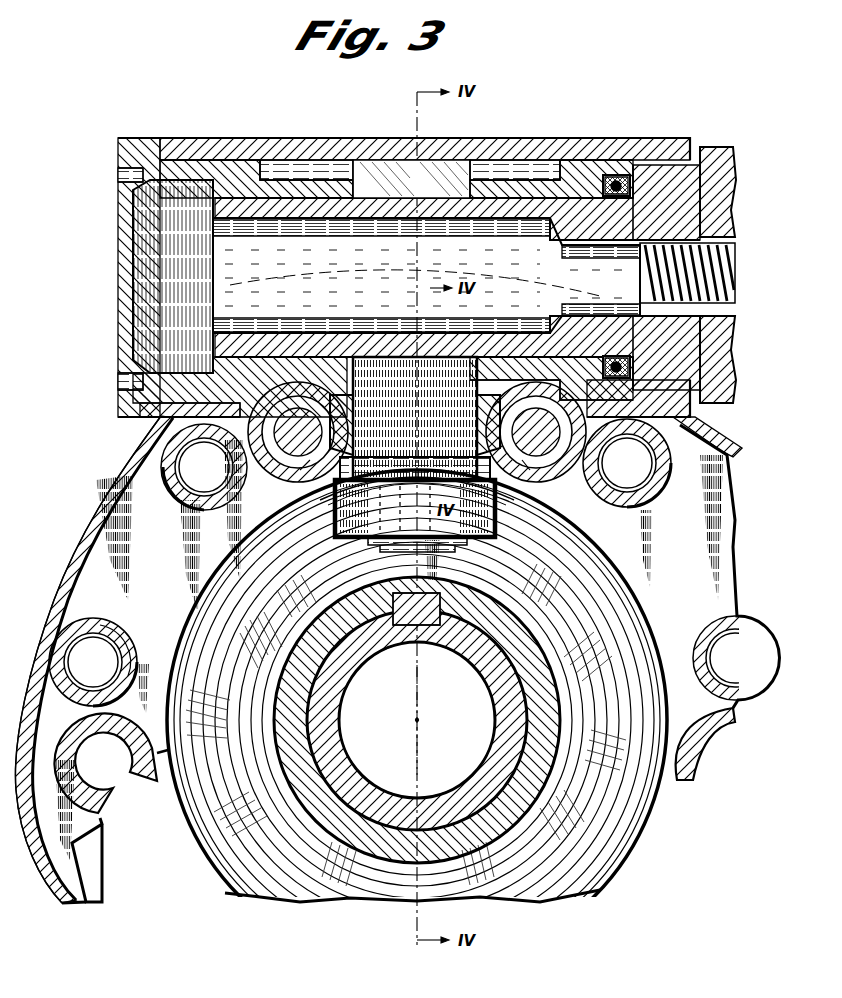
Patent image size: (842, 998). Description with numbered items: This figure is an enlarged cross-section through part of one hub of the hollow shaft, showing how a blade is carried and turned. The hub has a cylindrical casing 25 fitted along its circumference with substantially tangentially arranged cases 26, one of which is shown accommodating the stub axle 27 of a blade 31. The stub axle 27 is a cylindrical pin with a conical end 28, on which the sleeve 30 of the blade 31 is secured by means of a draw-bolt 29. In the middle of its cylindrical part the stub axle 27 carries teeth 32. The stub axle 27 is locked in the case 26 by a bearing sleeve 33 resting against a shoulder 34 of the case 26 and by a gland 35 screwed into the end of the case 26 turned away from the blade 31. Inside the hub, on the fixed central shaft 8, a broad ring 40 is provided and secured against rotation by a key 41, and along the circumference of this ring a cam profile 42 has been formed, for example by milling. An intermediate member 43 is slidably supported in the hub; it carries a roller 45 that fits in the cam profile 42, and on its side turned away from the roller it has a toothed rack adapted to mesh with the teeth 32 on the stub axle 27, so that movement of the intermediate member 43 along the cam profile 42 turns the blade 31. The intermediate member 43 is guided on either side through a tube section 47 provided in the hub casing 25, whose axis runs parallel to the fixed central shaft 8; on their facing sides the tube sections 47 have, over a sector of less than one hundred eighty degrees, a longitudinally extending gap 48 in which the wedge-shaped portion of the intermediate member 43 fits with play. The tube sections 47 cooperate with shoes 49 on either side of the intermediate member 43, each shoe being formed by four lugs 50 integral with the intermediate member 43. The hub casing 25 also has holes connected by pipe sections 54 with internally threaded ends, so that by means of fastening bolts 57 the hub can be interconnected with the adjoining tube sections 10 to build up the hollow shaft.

The fixed central shaft 8 is at (535, 720).
The tube section 10 is at (640, 582).
The cylindrical casing 25 is at (142, 430).
The case 26 is at (255, 147).
The stub axle 27 is at (298, 212).
The conical end 28 is at (672, 200).
The draw-bolt 29 is at (615, 282).
The sleeve 30 is at (708, 147).
The blade 31 is at (740, 160).
The teeth 32 is at (392, 185).
The bearing sleeve 33 is at (567, 178).
The shoulder 34 is at (627, 175).
The gland 35 is at (225, 178).
The broad ring 40 is at (300, 720).
The key 41 is at (410, 618).
The cam profile 42 is at (215, 602).
The intermediate member 43 is at (387, 395).
The roller 45 is at (356, 541).
The tube section 47 is at (258, 448).
The longitudinally extending gap 48 is at (722, 760).
The shoe 49 is at (517, 452).
The lug 50 is at (302, 458).
The pipe section 54 is at (707, 637).
The fastening bolt 57 is at (728, 645).